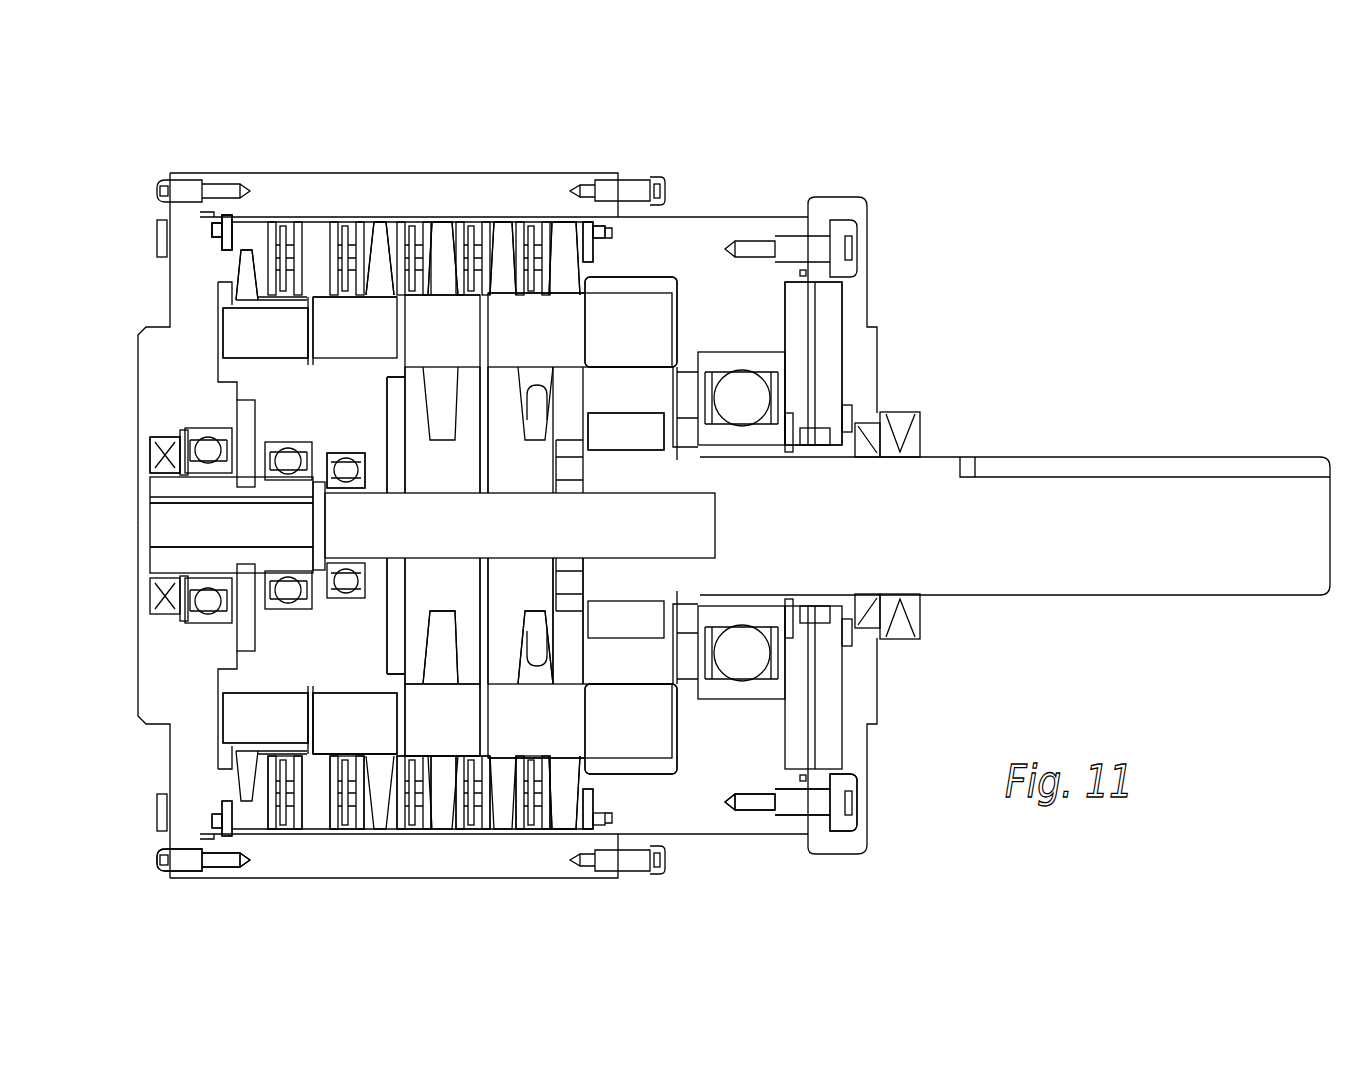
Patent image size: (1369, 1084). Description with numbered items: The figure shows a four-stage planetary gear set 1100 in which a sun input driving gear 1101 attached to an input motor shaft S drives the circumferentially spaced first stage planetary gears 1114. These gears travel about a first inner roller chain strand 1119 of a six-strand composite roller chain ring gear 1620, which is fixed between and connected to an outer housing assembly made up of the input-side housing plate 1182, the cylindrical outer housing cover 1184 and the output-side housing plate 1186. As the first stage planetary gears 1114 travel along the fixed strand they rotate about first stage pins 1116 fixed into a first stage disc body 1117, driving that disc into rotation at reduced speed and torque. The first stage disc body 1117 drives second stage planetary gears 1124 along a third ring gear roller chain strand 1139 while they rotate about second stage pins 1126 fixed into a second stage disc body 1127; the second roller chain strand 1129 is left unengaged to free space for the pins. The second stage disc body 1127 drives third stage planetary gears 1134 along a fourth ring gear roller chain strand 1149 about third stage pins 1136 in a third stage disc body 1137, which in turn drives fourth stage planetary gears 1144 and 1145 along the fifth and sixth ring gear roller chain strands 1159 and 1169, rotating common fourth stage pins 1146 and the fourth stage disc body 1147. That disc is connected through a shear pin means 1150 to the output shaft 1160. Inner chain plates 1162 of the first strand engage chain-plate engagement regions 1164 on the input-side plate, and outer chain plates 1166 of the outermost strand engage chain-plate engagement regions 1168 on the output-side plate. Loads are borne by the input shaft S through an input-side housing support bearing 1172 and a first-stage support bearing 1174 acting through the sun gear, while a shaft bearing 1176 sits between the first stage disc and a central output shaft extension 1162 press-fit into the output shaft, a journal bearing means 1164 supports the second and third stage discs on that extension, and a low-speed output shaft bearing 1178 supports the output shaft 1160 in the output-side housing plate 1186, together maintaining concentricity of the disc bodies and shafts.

The four-stage planetary gear set 1100 is at (1112, 267).
The sun input driving gear 1101 is at (178, 486).
The input motor shaft S is at (178, 528).
The first stage planetary gears 1114 is at (250, 280).
The first stage pins 1116 is at (252, 728).
The first stage disc body 1117 is at (373, 580).
The first inner roller chain strand 1119 is at (257, 813).
The second stage planetary gears 1124 is at (380, 245).
The second stage pins 1126 is at (352, 727).
The second stage disc body 1127 is at (422, 573).
The second roller chain strand 1129 is at (316, 813).
The third stage planetary gears 1134 is at (445, 240).
The third stage pins 1136 is at (442, 720).
The third stage disc body 1137 is at (503, 573).
The third ring gear roller chain strand 1139 is at (379, 808).
The fourth stage planetary gear 1144 is at (503, 238).
The fourth stage planetary gear 1145 is at (565, 248).
The common fourth stage pins 1146 is at (630, 723).
The fourth stage disc body 1147 is at (636, 390).
The fourth ring gear roller chain strand 1149 is at (442, 815).
The shear pin means 1150 is at (624, 430).
The fifth ring gear roller chain strand 1159 is at (503, 812).
The output shaft 1160 is at (1072, 497).
The central output shaft extension 1162 is at (683, 520).
The journal bearing means 1164 is at (214, 256).
The outer chain plates 1166 is at (603, 253).
The chain-plate engagement regions 1168 is at (605, 232).
The sixth ring gear roller chain strand 1169 is at (565, 812).
The input-side housing support bearing 1172 is at (205, 428).
The first-stage support bearing 1174 is at (288, 437).
The shaft bearing 1176 is at (352, 458).
The low-speed output shaft bearing 1178 is at (763, 362).
The input-side housing plate 1182 is at (206, 786).
The cylindrical outer housing cover 1184 is at (216, 877).
The output-side housing plate 1186 is at (783, 830).
The six-strand composite roller chain ring gear 1620 is at (600, 790).